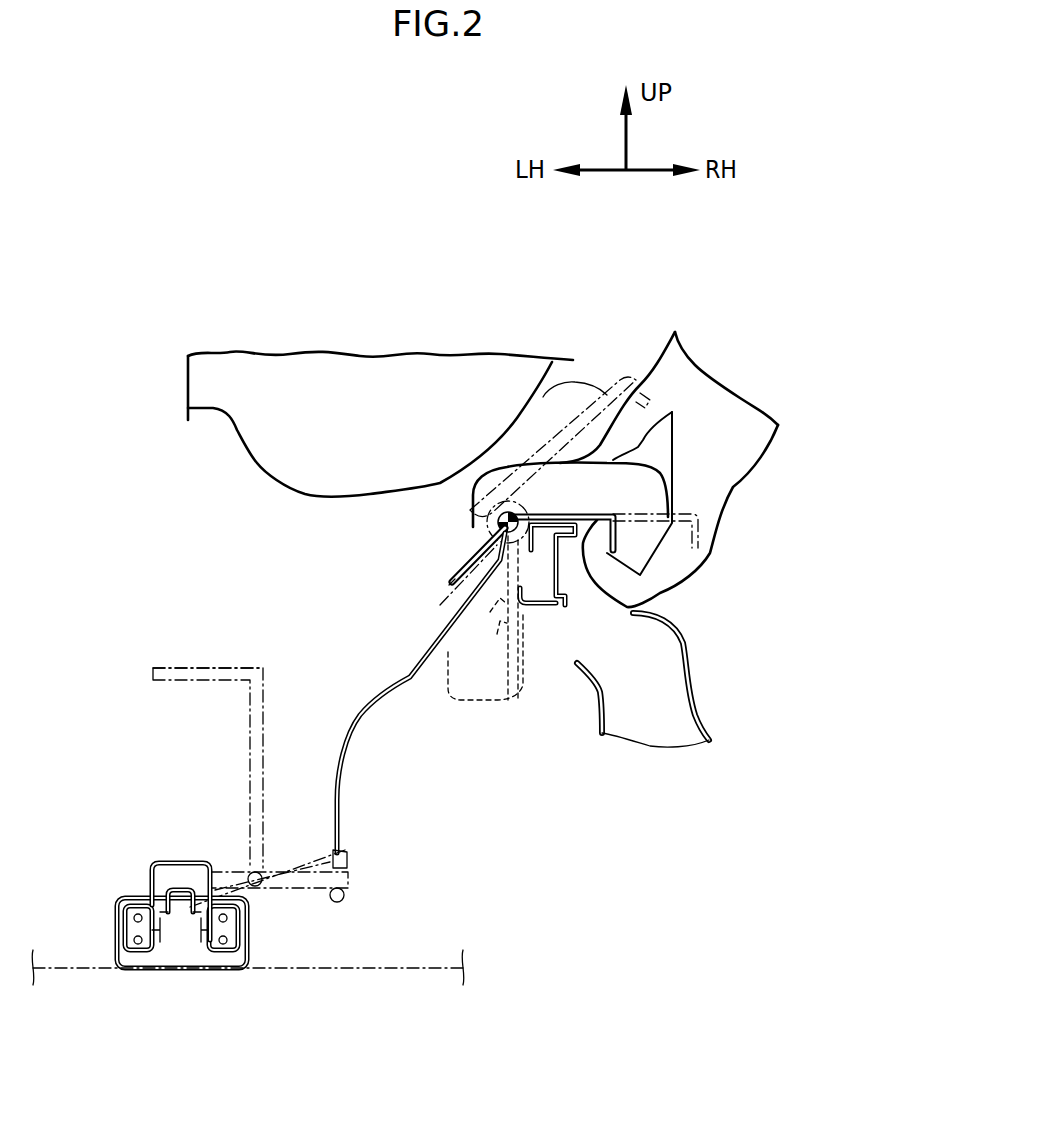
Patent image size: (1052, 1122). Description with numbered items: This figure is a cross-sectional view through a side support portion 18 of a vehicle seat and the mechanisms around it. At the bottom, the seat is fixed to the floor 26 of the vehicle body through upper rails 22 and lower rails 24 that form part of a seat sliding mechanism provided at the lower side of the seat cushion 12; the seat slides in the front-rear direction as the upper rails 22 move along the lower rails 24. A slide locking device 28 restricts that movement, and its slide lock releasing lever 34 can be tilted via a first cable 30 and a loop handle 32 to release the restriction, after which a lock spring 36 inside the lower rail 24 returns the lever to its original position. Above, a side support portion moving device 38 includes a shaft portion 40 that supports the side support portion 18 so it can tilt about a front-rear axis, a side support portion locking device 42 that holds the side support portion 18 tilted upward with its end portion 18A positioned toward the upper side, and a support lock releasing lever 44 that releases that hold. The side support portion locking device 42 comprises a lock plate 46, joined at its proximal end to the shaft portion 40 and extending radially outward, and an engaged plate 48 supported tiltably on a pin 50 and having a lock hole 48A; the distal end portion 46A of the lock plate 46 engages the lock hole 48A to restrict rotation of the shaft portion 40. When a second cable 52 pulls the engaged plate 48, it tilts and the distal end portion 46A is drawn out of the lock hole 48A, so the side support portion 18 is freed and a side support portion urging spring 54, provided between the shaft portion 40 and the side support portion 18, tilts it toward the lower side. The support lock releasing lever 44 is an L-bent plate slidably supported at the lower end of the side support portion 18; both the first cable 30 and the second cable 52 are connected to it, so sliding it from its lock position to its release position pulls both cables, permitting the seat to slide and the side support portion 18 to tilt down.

The seat cushion 12 is at (244, 252).
The side support portion 18 is at (510, 410).
The end portion 18A is at (584, 383).
The upper rail 22 is at (150, 863).
The lower rail 24 is at (247, 927).
The floor 26 is at (330, 968).
The slide locking device 28 is at (210, 797).
The first cable 30 is at (363, 710).
The loop handle 32 is at (190, 668).
The slide lock releasing lever 34 is at (348, 880).
The lock spring 36 is at (168, 937).
The side support portion moving device 38 is at (718, 638).
The shaft portion 40 is at (483, 520).
The side support portion locking device 42 is at (545, 630).
The support lock releasing lever 44 is at (700, 538).
The lock plate 46 is at (452, 560).
The distal end portion 46A is at (452, 582).
The engaged plate 48 is at (547, 603).
The lock hole 48A is at (513, 613).
The pin 50 is at (557, 597).
The second cable 52 is at (508, 705).
The side support portion urging spring 54 is at (487, 490).